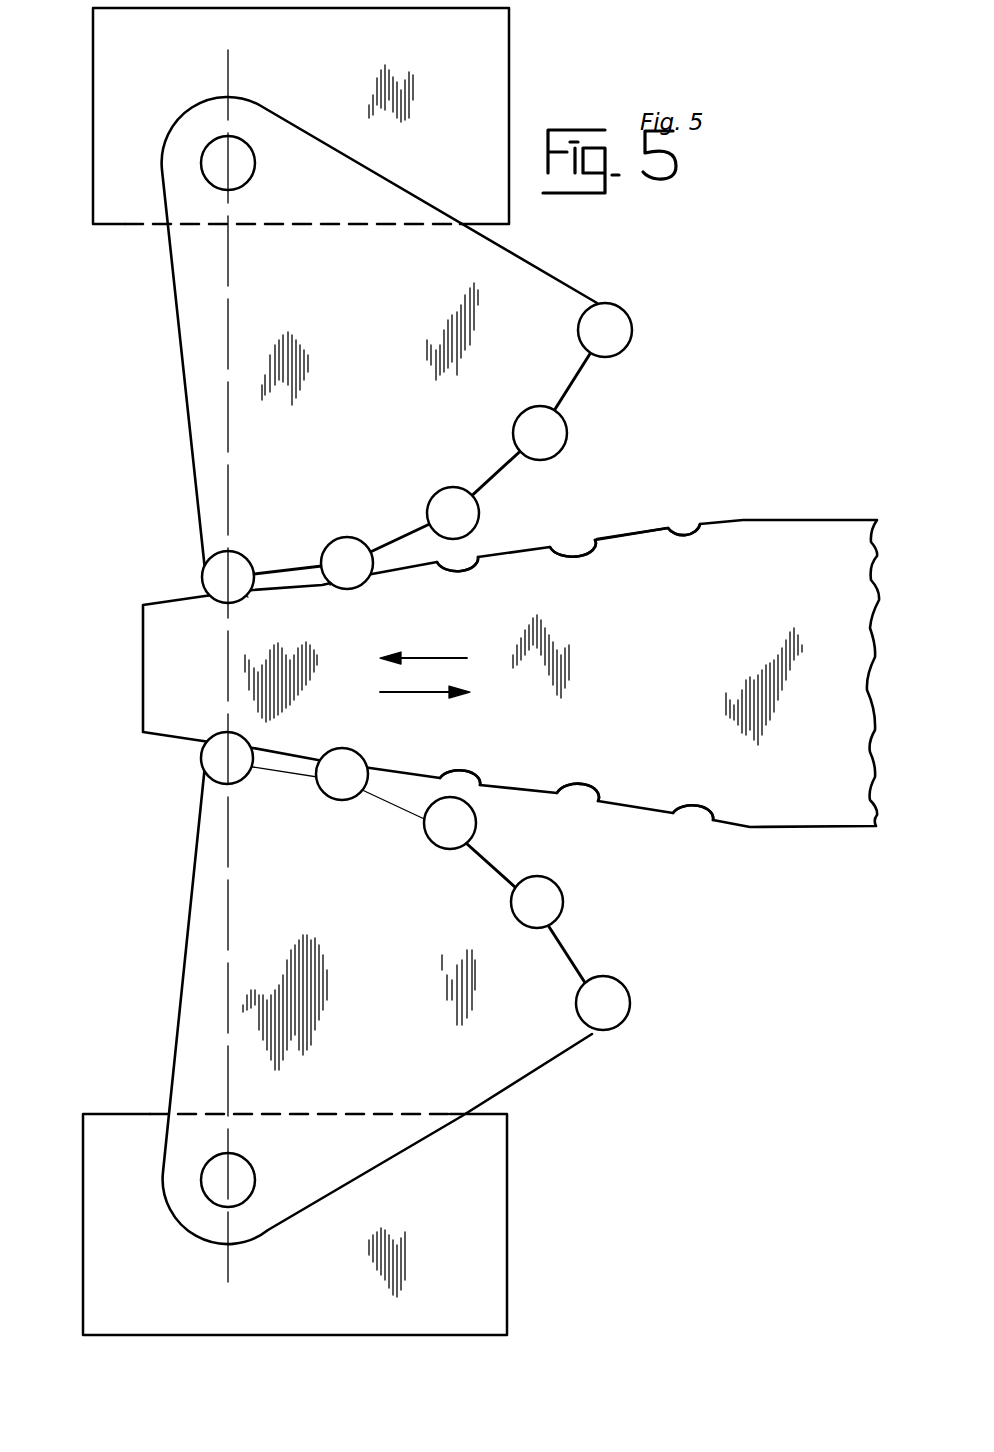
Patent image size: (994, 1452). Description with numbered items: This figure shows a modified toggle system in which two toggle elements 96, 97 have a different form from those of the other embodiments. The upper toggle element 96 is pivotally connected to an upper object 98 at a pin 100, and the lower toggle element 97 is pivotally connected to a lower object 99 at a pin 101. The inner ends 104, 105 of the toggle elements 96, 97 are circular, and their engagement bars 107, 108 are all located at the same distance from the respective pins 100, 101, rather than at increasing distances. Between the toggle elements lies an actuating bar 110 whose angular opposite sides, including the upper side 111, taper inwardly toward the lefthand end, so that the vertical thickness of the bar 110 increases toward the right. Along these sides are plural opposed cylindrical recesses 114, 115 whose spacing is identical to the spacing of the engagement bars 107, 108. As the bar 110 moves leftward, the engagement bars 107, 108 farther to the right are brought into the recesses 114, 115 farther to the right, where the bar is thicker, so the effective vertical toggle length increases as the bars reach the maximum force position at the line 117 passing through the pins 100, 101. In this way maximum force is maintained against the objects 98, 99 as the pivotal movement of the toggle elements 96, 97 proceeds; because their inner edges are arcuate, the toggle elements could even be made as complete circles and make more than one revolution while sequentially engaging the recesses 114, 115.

The toggle element 96 is at (558, 275).
The toggle element 97 is at (567, 1053).
The object 98 is at (509, 70).
The object 99 is at (507, 1197).
The pin 100 is at (218, 190).
The pin 101 is at (200, 1170).
The inner end of toggle element 104 is at (500, 473).
The inner end of toggle element 105 is at (372, 790).
The engagement bars 107 is at (202, 578).
The engagement bars 108 is at (322, 797).
The actuating bar 110 is at (683, 648).
The side of actuating bar 111 is at (628, 533).
The cylindrical recesses 114 is at (477, 558).
The cylindrical recesses 115 is at (337, 751).
The line of maximum force 117 is at (227, 472).